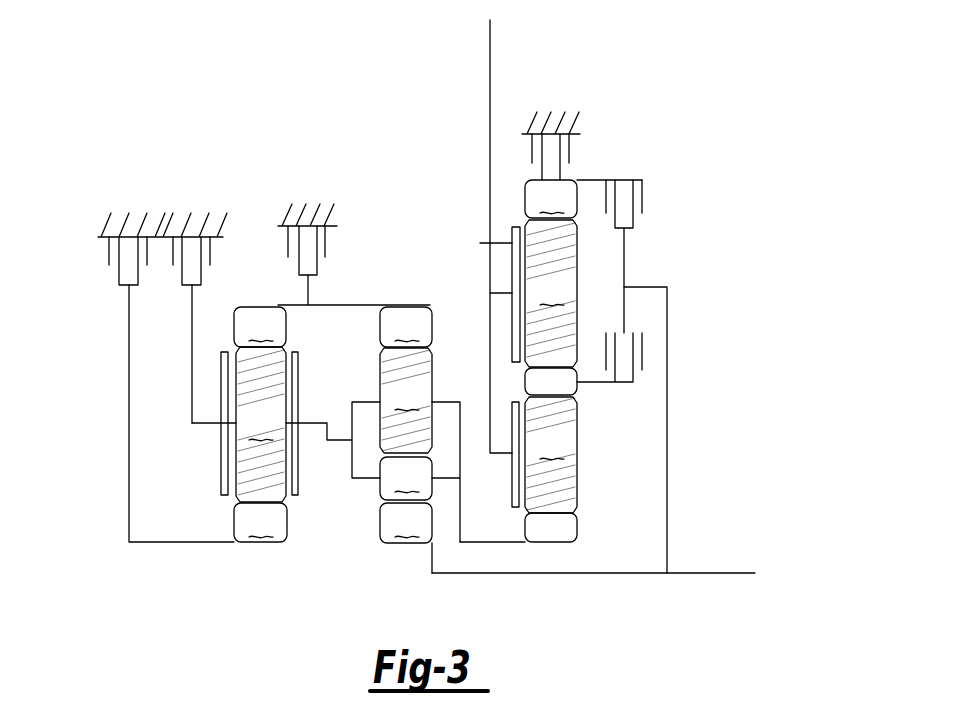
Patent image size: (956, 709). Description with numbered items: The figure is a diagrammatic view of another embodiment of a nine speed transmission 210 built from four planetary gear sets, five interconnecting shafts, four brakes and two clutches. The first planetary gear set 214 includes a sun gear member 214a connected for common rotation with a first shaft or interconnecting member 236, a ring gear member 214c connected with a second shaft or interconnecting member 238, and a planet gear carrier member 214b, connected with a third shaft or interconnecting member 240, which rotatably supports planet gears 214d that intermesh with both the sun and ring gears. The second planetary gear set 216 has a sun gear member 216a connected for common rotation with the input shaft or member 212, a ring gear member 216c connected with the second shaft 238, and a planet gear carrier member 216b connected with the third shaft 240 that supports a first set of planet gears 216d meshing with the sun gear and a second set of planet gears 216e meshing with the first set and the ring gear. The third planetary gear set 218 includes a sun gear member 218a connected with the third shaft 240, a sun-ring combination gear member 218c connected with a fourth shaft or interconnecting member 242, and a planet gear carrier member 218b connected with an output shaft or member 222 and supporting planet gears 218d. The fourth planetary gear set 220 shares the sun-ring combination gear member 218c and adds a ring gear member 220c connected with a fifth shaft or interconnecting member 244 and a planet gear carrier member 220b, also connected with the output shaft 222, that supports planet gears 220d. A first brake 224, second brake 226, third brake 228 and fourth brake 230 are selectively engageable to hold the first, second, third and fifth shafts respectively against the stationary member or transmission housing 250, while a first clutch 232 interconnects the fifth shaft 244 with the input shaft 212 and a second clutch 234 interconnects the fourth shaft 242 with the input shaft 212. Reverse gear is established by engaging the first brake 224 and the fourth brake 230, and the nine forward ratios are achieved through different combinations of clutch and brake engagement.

The transmission 210 is at (692, 115).
The input shaft or member 212 is at (718, 575).
The first planetary gear set 214 is at (220, 469).
The sun gear member 214a is at (260, 522).
The planet gear carrier member 214b is at (221, 461).
The ring gear member 214c is at (260, 327).
The planet gears 214d is at (261, 424).
The second planetary gear set 216 is at (429, 465).
The sun gear member 216a is at (406, 523).
The planet gear carrier member 216b is at (460, 402).
The ring gear member 216c is at (406, 327).
The first set of planet gears 216d is at (406, 400).
The second set of planet gears 216e is at (406, 478).
The third planetary gear set 218 is at (564, 519).
The sun gear member 218a is at (568, 527).
The planet gear carrier member 218b is at (512, 478).
The sun-ring combination gear member 218c is at (562, 385).
The planet gears 218d is at (551, 455).
The fourth planetary gear set 220 is at (552, 234).
The planet gear carrier member 220b is at (480, 243).
The ring gear member 220c is at (551, 199).
The planet gears 220d is at (551, 293).
The output shaft or member 222 is at (490, 32).
The first brake 224 is at (109, 250).
The second brake 226 is at (325, 240).
The third brake 228 is at (210, 250).
The fourth brake 230 is at (570, 142).
The first clutch 232 is at (643, 197).
The second clutch 234 is at (643, 350).
The first shaft or interconnecting member 236 is at (129, 502).
The second shaft or interconnecting member 238 is at (335, 305).
The third shaft or interconnecting member 240 is at (192, 385).
The fourth shaft or interconnecting member 242 is at (604, 383).
The fifth shaft or interconnecting member 244 is at (635, 180).
The stationary member or transmission housing 250 is at (98, 236).